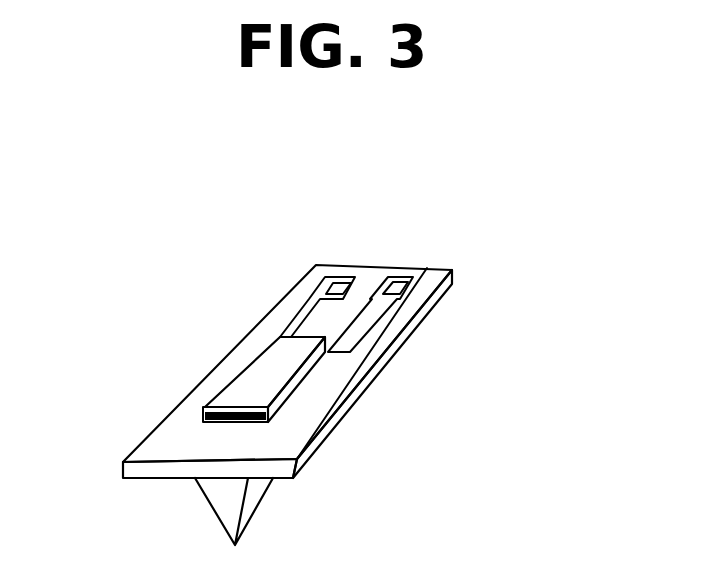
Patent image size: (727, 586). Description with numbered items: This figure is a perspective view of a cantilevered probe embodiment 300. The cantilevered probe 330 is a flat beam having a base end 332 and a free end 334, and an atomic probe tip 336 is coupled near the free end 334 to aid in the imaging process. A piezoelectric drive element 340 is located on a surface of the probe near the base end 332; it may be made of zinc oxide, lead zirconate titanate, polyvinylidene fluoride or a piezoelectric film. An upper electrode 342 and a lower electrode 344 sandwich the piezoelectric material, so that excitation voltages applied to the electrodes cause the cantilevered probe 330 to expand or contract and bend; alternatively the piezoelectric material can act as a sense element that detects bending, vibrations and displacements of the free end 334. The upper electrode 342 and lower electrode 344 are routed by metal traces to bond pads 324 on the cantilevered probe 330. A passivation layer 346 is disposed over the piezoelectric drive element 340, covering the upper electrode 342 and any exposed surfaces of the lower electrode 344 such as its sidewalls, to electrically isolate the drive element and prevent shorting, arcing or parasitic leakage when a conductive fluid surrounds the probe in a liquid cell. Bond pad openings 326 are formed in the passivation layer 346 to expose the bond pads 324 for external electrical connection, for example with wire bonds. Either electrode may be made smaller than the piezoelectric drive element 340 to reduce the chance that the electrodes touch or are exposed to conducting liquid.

The cantilevered probe perspective view 300 is at (91, 228).
The bond pads 324 is at (417, 271).
The bond pad openings 326 is at (399, 277).
The cantilevered probe 330 is at (434, 308).
The base end 332 is at (397, 337).
The free end 334 is at (305, 462).
The atomic probe tip 336 is at (257, 512).
The piezoelectric drive element 340 is at (270, 420).
The upper electrode 342 is at (259, 401).
The lower electrode 344 is at (243, 423).
The passivation layer 346 is at (203, 414).